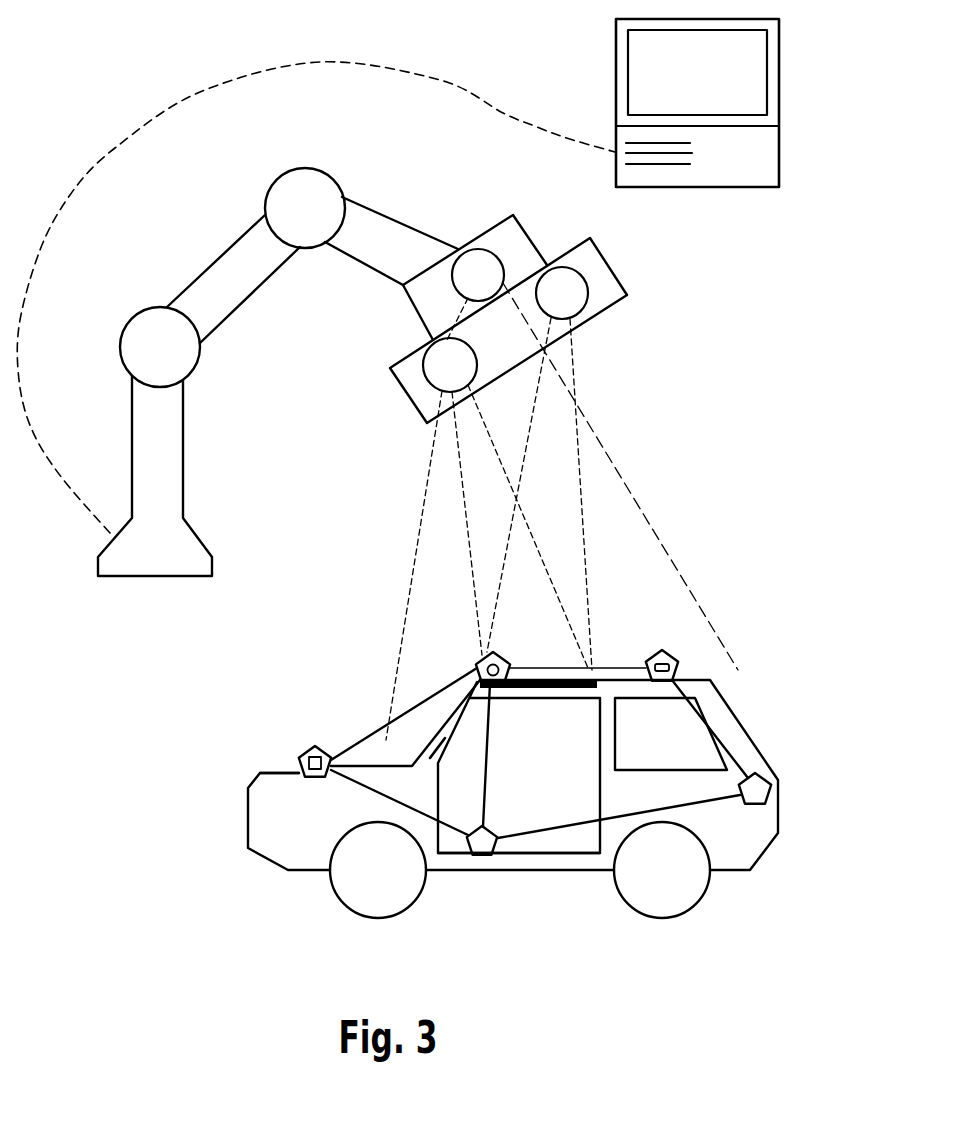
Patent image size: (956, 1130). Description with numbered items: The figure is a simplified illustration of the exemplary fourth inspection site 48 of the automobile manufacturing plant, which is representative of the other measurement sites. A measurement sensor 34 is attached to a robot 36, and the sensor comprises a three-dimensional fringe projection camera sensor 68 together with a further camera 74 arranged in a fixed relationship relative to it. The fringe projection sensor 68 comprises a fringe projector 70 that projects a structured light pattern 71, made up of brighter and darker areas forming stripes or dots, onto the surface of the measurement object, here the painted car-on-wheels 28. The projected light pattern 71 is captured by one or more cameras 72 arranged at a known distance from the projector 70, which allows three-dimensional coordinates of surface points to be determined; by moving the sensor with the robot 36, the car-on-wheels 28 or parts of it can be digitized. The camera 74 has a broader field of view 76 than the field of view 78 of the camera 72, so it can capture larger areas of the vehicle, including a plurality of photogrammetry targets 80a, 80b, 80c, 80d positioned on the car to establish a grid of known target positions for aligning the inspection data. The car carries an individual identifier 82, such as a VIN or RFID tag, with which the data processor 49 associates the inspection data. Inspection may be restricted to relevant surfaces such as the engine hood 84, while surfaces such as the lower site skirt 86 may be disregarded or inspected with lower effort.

The car-on-wheels 28 is at (273, 853).
The measurement sensor 34 is at (453, 227).
The robot 36 is at (183, 441).
The fourth inspection site 48 is at (118, 101).
The data processor 49 is at (779, 151).
The 3D fringe projection camera sensor 68 is at (615, 270).
The fringe projector 70 is at (430, 380).
The light pattern 71 is at (538, 690).
The camera 72 is at (588, 298).
The camera 74 is at (412, 308).
The field of view 76 is at (410, 587).
The field of view 78 is at (585, 560).
The photogrammetry target 80a is at (310, 746).
The photogrammetry target 80b is at (490, 860).
The photogrammetry target 80c is at (502, 652).
The photogrammetry target 80d is at (651, 660).
The identifier 82 is at (437, 750).
The engine hood 84 is at (272, 769).
The lower site skirt 86 is at (577, 860).